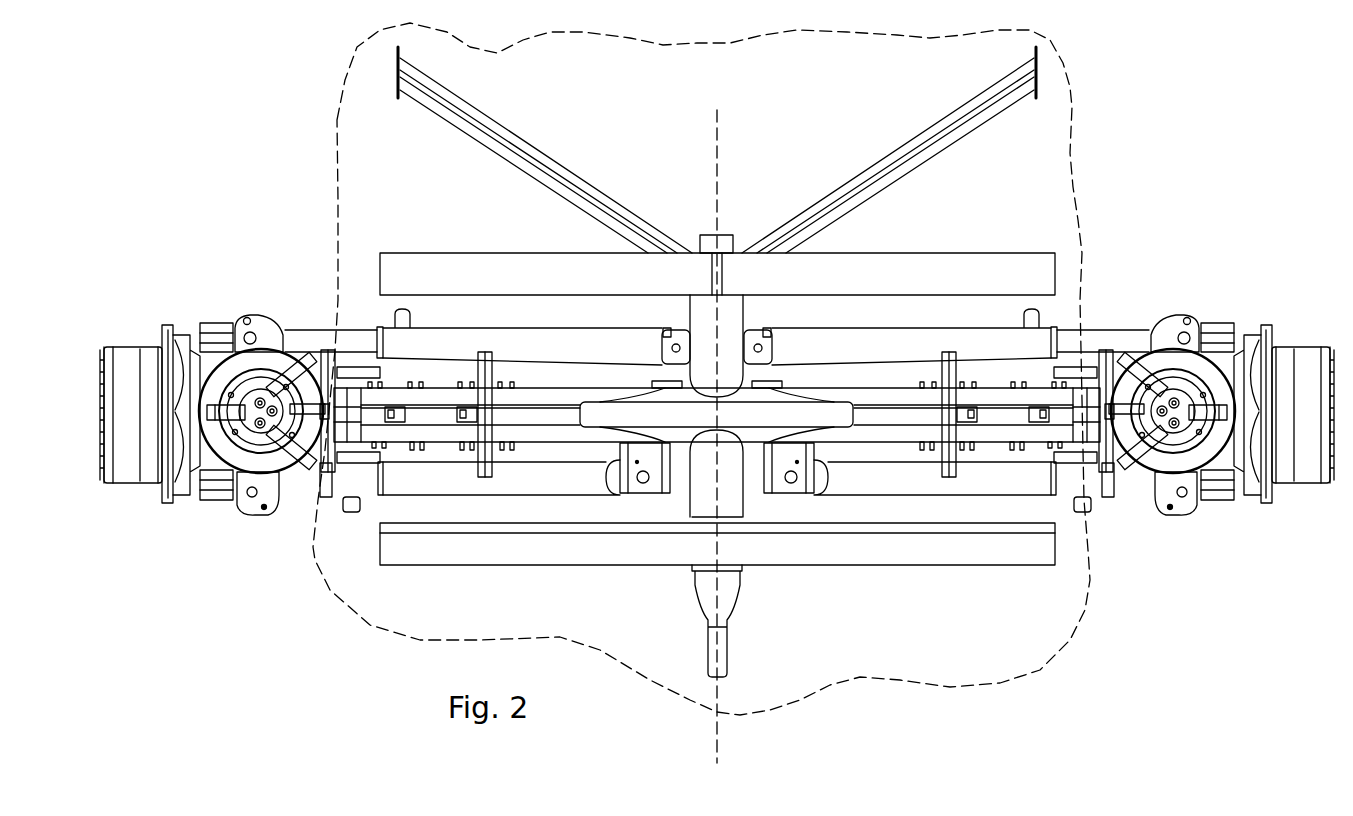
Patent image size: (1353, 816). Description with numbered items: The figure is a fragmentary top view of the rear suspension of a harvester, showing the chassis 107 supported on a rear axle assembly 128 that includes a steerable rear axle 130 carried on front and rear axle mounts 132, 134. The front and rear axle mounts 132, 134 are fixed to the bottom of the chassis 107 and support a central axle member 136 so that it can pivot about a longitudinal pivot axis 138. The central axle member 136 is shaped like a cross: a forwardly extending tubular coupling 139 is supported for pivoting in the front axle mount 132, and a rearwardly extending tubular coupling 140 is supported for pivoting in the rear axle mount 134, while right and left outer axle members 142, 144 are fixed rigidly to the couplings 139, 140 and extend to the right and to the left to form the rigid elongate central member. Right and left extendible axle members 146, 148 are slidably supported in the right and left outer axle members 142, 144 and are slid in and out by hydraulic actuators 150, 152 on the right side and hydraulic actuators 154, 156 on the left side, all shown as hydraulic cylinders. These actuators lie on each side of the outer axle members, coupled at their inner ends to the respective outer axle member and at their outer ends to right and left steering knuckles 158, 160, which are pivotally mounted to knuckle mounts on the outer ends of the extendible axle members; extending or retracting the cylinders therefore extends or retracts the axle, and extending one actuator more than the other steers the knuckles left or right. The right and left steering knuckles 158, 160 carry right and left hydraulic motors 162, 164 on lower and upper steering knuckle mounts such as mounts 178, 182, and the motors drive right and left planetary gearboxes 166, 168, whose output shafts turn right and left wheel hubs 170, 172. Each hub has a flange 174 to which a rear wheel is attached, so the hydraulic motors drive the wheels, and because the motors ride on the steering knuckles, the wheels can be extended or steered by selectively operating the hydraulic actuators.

The chassis 107 is at (1072, 107).
The rear axle assembly 128 is at (312, 224).
The steerable rear axle 130 is at (403, 435).
The front axle mount 132 is at (540, 265).
The rear axle mount 134 is at (598, 555).
The central axle member 136 is at (755, 418).
The longitudinal pivot axis 138 is at (717, 133).
The forwardly extending tubular coupling 139 is at (733, 317).
The rearwardly extending tubular coupling 140 is at (693, 495).
The right outer axle member 142 is at (908, 425).
The left outer axle member 144 is at (515, 433).
The right extendible axle member 146 is at (1083, 430).
The left extendible axle member 148 is at (350, 457).
The hydraulic actuator 150 is at (940, 335).
The hydraulic actuator 152 is at (872, 483).
The hydraulic actuator 154 is at (458, 340).
The hydraulic actuator 156 is at (548, 482).
The right steering knuckle 158 is at (1222, 365).
The left steering knuckle 160 is at (213, 345).
The right hydraulic motor 162 is at (1218, 477).
The left hydraulic motor 164 is at (213, 500).
The right planetary gearbox 166 is at (1305, 357).
The left planetary gearbox 168 is at (145, 357).
The right wheel hub 170 is at (1290, 473).
The left wheel hub 172 is at (122, 475).
The flange 174 is at (168, 340).
The steering knuckle mount 178 is at (1138, 358).
The steering knuckle mount 182 is at (282, 362).